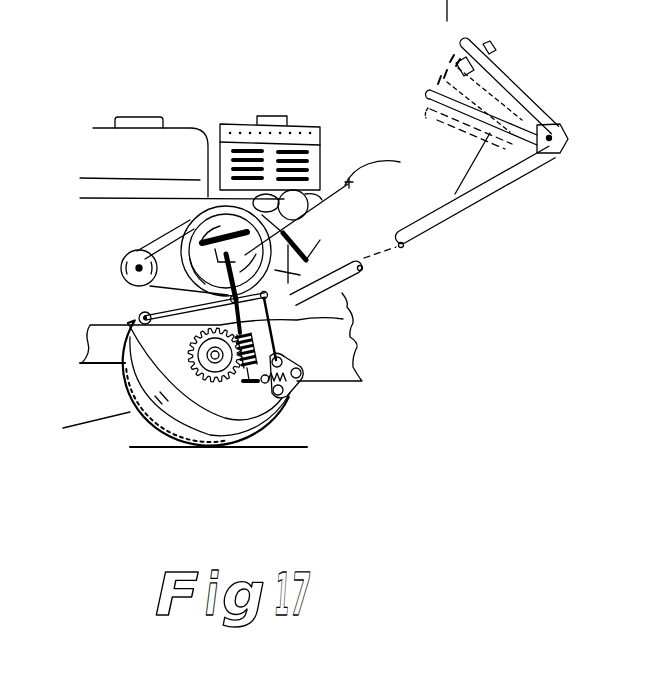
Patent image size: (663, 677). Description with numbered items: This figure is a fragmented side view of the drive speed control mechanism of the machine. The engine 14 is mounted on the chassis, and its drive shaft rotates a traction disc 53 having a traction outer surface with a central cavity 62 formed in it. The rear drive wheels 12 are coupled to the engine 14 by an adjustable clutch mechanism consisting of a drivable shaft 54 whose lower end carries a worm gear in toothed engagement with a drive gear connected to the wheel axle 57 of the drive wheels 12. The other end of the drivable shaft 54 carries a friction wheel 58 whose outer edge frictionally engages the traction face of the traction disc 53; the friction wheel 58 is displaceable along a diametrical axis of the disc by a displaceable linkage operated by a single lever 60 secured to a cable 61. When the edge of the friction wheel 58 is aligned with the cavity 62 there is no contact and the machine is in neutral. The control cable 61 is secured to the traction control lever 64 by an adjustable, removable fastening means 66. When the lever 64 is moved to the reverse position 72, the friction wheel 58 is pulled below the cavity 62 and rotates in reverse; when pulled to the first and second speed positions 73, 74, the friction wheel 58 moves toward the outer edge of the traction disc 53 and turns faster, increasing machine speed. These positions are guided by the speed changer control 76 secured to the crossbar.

The drive wheel 12 is at (290, 394).
The engine 14 is at (298, 122).
The traction disc 53 is at (155, 292).
The drivable shaft 54 is at (355, 320).
The wheel axle 57 is at (205, 356).
The friction wheel 58 is at (246, 254).
The single lever 60 is at (140, 310).
The cable 61 is at (471, 168).
The central cavity 62 is at (280, 257).
The traction control lever 64 is at (430, 94).
The fastening means 66 is at (517, 113).
The reverse lever position 72 is at (412, 123).
The first forward drive speed position 73 is at (413, 70).
The second forward drive speed position 74 is at (430, 47).
The speed changer control 76 is at (487, 45).